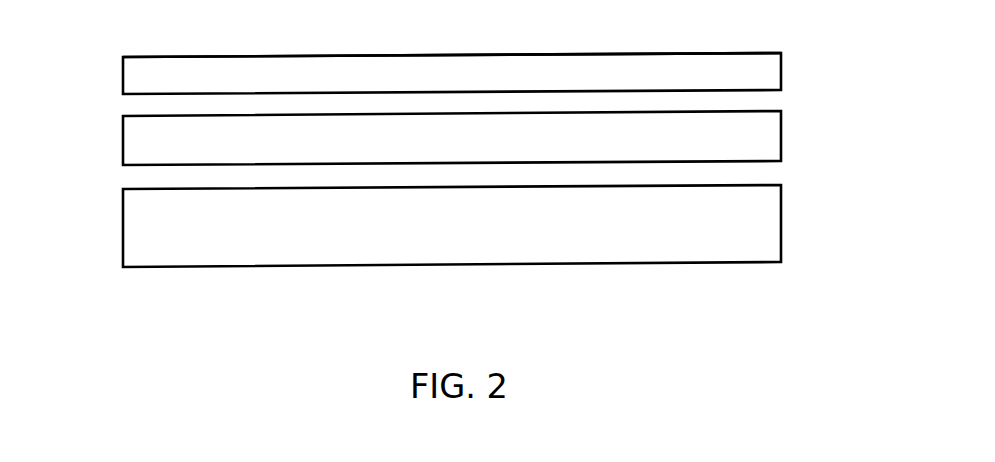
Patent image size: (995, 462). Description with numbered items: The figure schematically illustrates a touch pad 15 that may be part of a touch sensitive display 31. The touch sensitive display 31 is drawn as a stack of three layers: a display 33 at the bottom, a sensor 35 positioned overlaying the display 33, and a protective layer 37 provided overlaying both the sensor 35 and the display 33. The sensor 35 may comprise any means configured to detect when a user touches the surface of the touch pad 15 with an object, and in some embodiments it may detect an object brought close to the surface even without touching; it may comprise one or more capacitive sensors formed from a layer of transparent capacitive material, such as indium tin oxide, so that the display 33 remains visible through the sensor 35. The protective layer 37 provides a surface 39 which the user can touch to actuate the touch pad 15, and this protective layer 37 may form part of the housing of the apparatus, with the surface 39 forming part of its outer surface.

The touch pad 15 is at (829, 75).
The touch sensitive display 31 is at (71, 206).
The display 33 is at (690, 263).
The sensor 35 is at (782, 137).
The protective layer 37 is at (759, 65).
The surface 39 is at (640, 53).